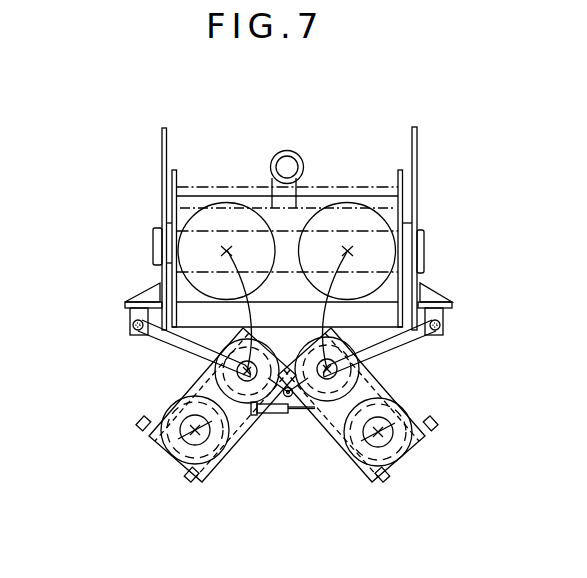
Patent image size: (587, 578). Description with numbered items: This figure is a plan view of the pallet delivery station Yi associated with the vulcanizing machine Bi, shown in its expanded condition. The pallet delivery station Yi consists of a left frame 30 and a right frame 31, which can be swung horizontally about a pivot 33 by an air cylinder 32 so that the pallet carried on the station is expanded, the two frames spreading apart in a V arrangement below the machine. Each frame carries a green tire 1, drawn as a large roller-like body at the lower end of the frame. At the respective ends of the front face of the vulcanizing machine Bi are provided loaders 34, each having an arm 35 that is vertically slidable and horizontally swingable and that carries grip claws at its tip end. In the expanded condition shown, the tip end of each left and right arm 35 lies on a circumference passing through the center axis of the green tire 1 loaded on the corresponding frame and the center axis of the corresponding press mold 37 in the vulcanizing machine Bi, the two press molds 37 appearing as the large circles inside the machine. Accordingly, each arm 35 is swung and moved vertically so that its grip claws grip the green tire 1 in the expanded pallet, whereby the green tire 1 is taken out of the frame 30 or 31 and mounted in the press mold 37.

The green tire 1 is at (214, 463).
The left frame 30 is at (370, 378).
The right frame 31 is at (190, 382).
The air cylinder 32 is at (268, 415).
The pivot 33 is at (294, 410).
The loader 34 is at (130, 314).
The arm 35 is at (155, 337).
The press mold 37 is at (212, 200).
The vulcanizing machine Bi is at (417, 200).
The pallet delivery station Yi is at (422, 418).